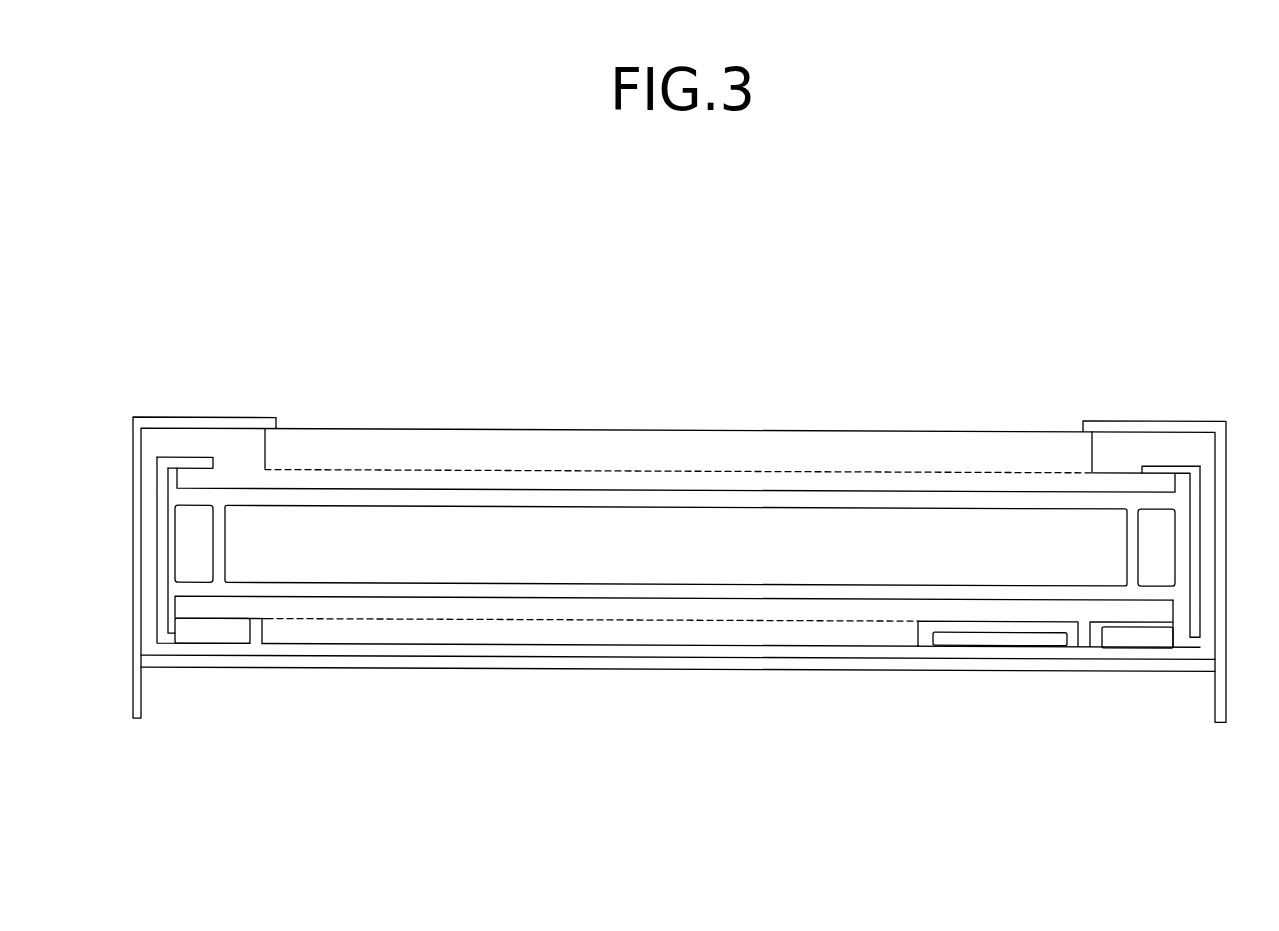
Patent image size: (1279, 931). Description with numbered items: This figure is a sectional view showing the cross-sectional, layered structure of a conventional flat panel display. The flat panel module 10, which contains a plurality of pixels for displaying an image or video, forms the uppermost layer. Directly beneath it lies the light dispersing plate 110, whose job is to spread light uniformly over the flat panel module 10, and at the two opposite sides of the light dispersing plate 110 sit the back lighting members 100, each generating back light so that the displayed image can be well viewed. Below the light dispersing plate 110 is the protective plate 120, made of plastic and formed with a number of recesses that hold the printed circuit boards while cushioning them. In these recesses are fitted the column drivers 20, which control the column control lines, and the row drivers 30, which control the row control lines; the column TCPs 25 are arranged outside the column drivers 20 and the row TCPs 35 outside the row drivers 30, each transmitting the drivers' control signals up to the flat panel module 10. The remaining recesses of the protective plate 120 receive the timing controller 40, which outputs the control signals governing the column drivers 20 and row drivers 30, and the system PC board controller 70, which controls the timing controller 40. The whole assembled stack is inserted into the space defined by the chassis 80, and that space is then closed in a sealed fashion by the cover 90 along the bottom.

The flat panel module 10 is at (592, 443).
The column driver 20 is at (202, 645).
The column TCP 25 is at (193, 460).
The row driver 30 is at (1125, 648).
The row TCP 35 is at (1157, 463).
The timing controller 40 is at (1000, 718).
The system PC board controller 70 is at (982, 648).
The chassis 80 is at (1225, 485).
The cover 90 is at (732, 662).
The back lighting member 100 is at (188, 532).
The light dispersing plate 110 is at (750, 508).
The protective plate 120 is at (467, 605).